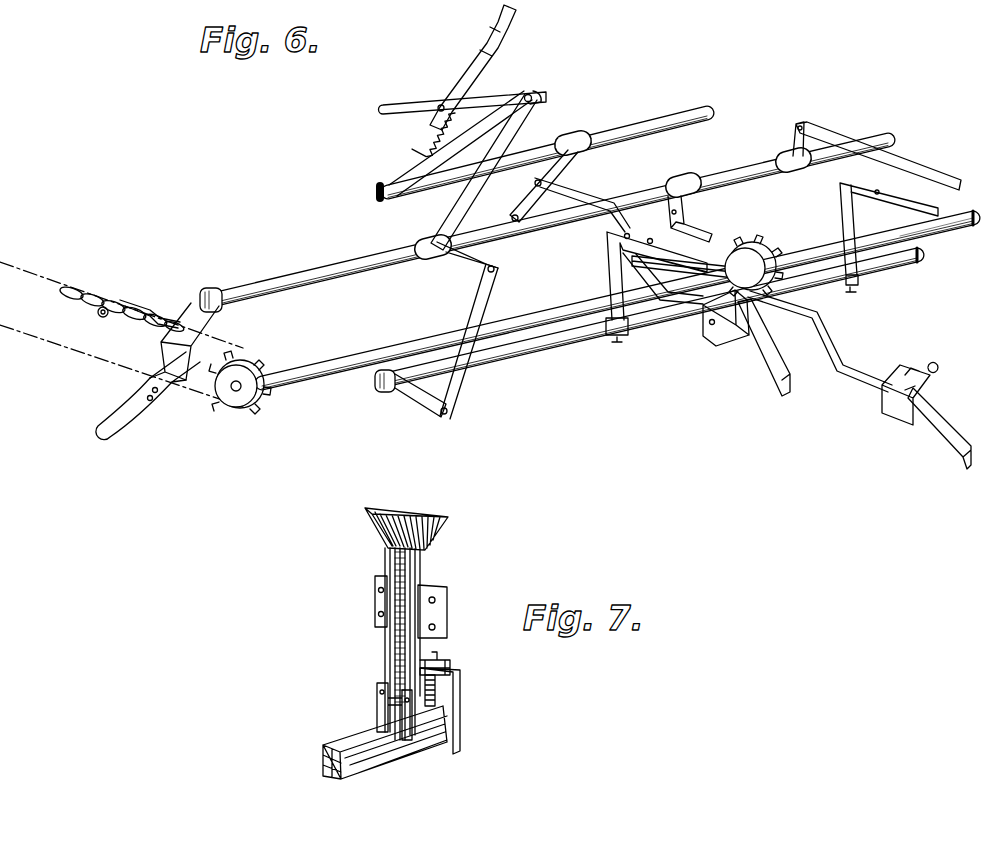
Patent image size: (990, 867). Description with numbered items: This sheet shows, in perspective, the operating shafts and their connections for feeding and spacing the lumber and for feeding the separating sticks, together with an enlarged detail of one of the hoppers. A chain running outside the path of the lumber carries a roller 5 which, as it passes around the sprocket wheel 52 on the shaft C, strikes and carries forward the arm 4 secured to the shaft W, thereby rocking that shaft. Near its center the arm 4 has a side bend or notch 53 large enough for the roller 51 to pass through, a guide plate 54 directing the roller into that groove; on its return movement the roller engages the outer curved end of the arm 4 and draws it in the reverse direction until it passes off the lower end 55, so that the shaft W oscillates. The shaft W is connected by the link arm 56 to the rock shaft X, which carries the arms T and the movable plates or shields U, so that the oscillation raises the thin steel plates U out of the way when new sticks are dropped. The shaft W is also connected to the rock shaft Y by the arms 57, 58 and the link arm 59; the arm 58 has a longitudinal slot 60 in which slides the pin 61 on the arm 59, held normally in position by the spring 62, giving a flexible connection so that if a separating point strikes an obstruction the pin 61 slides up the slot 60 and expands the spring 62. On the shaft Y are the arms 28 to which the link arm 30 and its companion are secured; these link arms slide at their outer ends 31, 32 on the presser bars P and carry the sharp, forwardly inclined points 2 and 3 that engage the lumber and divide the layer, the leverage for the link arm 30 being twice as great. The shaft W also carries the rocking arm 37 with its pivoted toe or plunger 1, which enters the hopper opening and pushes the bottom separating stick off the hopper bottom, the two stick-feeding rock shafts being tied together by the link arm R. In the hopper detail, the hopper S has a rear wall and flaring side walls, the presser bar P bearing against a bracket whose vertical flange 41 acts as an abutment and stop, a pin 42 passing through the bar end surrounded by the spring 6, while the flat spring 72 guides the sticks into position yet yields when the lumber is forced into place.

In FIG. 6, the pivoted toe or plunger 1 is at (762, 248).
In FIG. 6, the separating point 2 is at (772, 381).
In FIG. 6, the separating point 3 is at (956, 453).
In FIG. 6, the arm 4 is at (162, 371).
In FIG. 6, the roller 5 is at (95, 313).
In FIG. 7, the spring 6 is at (440, 700).
In FIG. 6, the arm 28 is at (573, 156).
In FIG. 6, the link arm 30 is at (832, 332).
In FIG. 6, the outer end of link arm 31 is at (722, 336).
In FIG. 6, the outer end of link arm 32 is at (905, 413).
In FIG. 6, the rocking arm 37 is at (700, 233).
In FIG. 7, the vertical flange 41 is at (453, 729).
In FIG. 7, the pin 42 is at (450, 664).
In FIG. 6, the roller 51 is at (82, 289).
In FIG. 6, the sprocket wheel 52 is at (268, 399).
In FIG. 6, the side bend or notch 53 is at (206, 324).
In FIG. 6, the guide plate 54 is at (180, 301).
In FIG. 6, the lower end of arm 55 is at (108, 432).
In FIG. 6, the link arm 56 is at (455, 394).
In FIG. 6, the arm 57 is at (450, 209).
In FIG. 6, the arm 58 is at (412, 148).
In FIG. 6, the link arm 59 is at (524, 95).
In FIG. 6, the longitudinal slot 60 is at (468, 62).
In FIG. 6, the pin 61 is at (440, 104).
In FIG. 6, the spring 62 is at (451, 131).
In FIG. 7, the flat spring 72 is at (380, 704).
In FIG. 6, the shaft C is at (347, 362).
In FIG. 7, the presser bar P is at (350, 743).
In FIG. 6, the link arm R is at (945, 181).
In FIG. 7, the hopper S is at (425, 566).
In FIG. 6, the arm T is at (606, 289).
In FIG. 6, the movable plate or shield U is at (932, 226).
In FIG. 6, the shaft W is at (284, 285).
In FIG. 6, the rock shaft X is at (531, 357).
In FIG. 6, the rock shaft Y is at (609, 132).